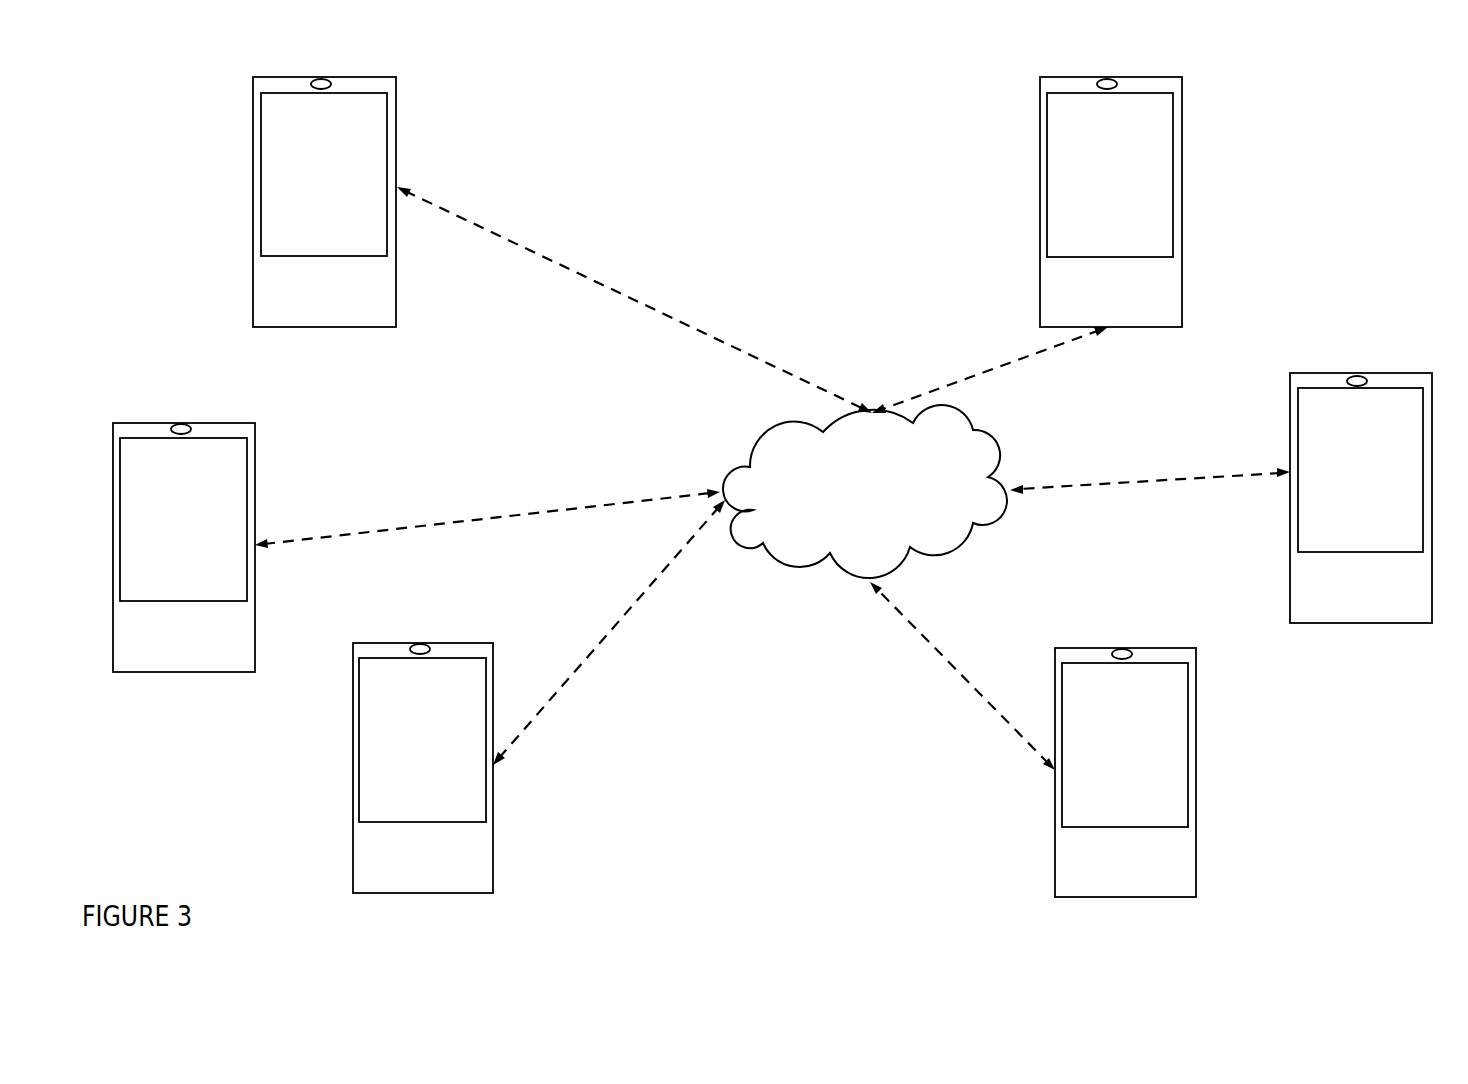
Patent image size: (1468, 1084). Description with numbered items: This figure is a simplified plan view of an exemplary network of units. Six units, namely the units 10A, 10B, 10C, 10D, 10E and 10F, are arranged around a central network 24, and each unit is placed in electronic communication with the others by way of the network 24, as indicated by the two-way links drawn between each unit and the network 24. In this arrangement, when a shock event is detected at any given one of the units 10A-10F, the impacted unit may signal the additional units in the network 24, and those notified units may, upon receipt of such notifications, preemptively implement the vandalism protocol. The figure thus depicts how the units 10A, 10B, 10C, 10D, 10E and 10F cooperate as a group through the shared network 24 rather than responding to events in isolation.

The unit 10A is at (468, 187).
The unit 10B is at (307, 495).
The unit 10C is at (590, 780).
The unit 10D is at (1267, 787).
The unit 10E is at (1355, 360).
The unit 10F is at (1217, 190).
The network 24 is at (868, 503).